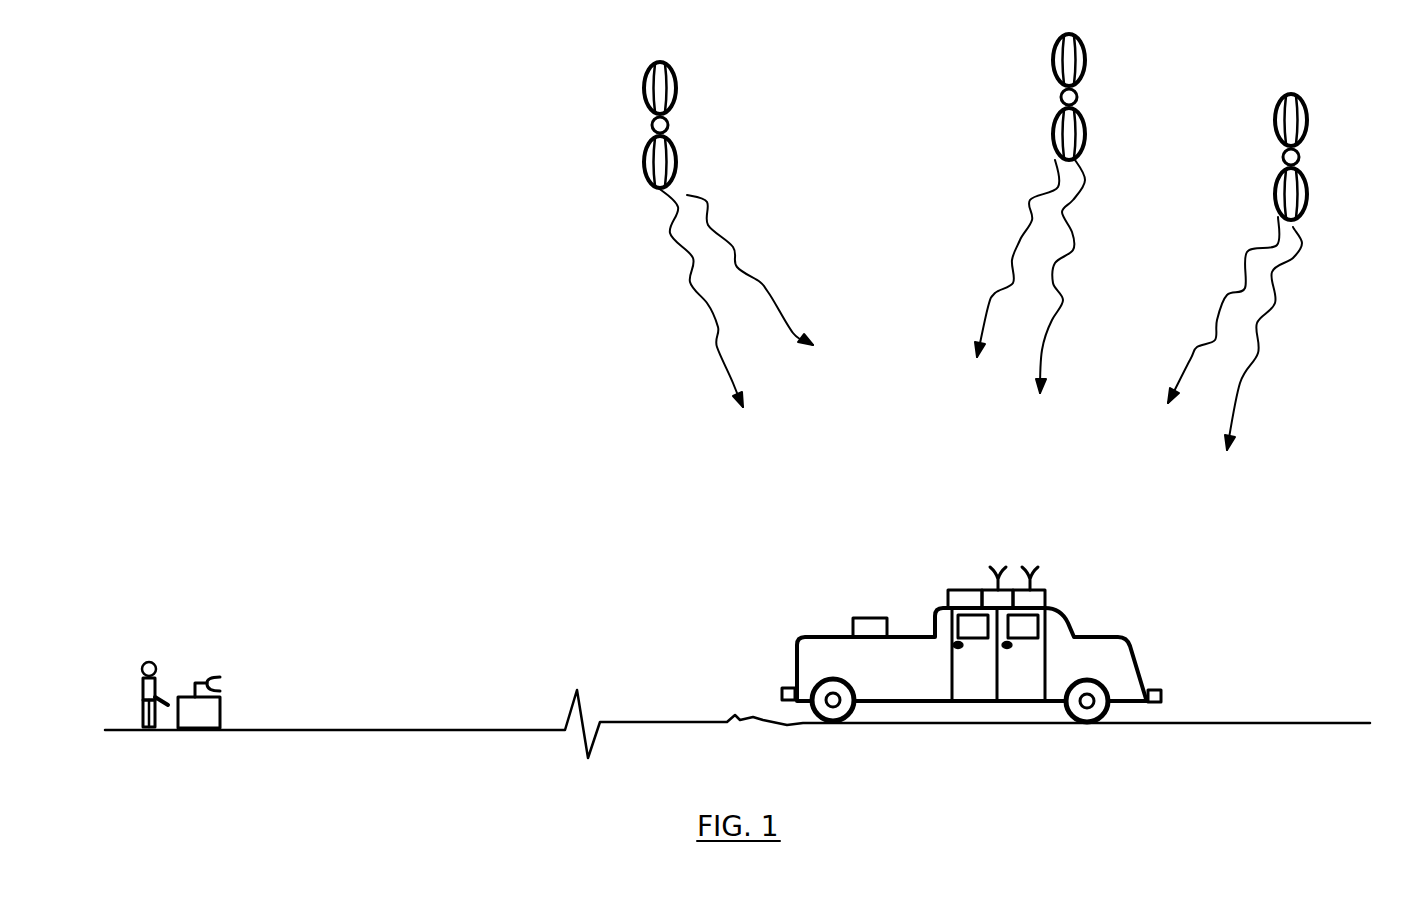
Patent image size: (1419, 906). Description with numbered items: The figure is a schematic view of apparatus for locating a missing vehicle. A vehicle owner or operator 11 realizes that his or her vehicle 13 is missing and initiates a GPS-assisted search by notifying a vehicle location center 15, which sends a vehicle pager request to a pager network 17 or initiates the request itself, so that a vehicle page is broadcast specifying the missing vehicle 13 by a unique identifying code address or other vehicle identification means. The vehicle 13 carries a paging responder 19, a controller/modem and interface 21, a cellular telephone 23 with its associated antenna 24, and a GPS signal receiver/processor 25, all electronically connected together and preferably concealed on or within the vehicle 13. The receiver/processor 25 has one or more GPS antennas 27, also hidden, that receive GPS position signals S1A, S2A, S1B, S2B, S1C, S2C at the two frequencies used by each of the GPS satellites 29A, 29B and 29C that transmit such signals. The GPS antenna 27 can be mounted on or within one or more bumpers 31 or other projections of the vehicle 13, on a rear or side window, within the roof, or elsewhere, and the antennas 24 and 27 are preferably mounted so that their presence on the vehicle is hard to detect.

The vehicle owner or operator 11 is at (153, 666).
The vehicle 13 is at (930, 683).
The vehicle location center 15 is at (257, 731).
The pager network 17 is at (200, 718).
The paging responder 19 is at (865, 627).
The controller/modem and interface 21 is at (967, 598).
The cellular telephone 23 is at (1030, 600).
The antenna 24 is at (1038, 567).
The GPS signal receiver/processor 25 is at (998, 598).
The GPS antenna 27 is at (1007, 565).
The GPS satellite 29A is at (667, 62).
The GPS satellite 29B is at (1083, 33).
The GPS satellite 29C is at (1293, 90).
The bumper 31 is at (783, 689).
The GPS position signal S1A is at (712, 213).
The GPS position signal S2A is at (693, 258).
The GPS position signal S1B is at (1060, 215).
The GPS position signal S2B is at (1053, 172).
The GPS position signal S1C is at (1278, 313).
The GPS position signal S2C is at (1245, 257).